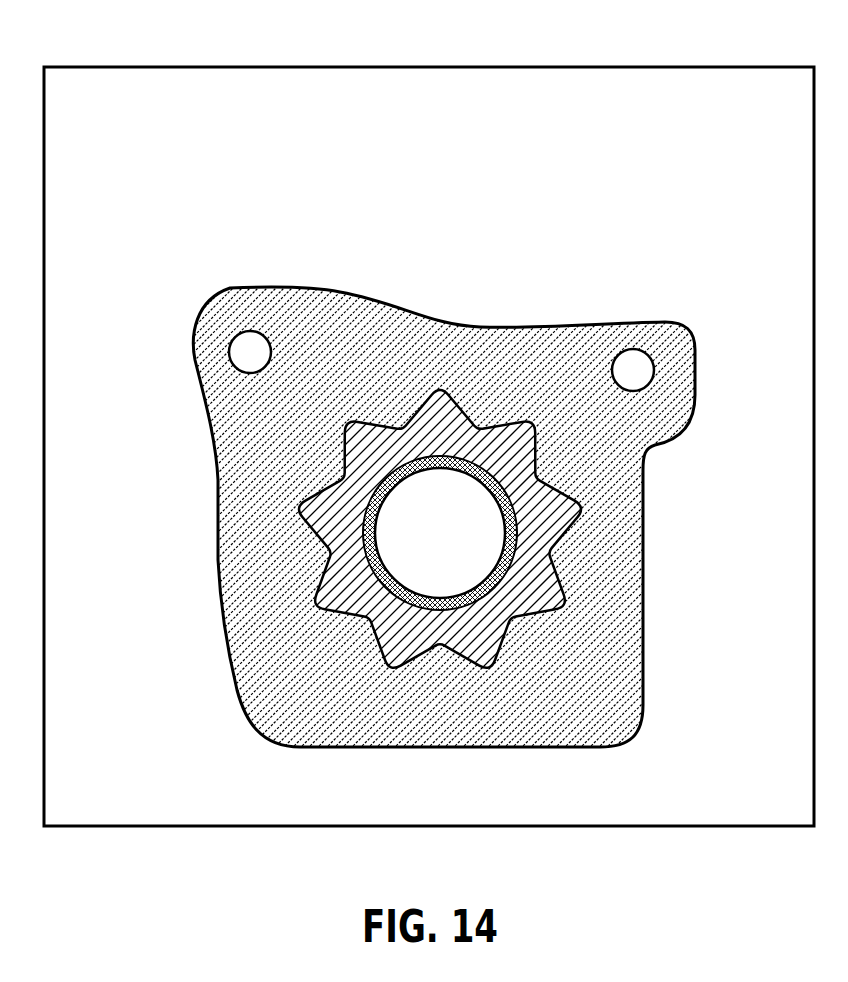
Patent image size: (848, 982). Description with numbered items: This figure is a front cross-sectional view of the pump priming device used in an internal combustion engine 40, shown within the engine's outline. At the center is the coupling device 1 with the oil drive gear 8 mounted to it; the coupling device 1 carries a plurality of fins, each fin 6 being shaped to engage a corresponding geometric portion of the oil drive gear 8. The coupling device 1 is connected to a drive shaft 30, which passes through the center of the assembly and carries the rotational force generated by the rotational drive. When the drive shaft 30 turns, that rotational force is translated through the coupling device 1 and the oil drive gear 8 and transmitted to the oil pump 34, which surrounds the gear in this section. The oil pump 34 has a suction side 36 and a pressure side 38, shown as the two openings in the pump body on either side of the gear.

The coupling device 1 is at (424, 463).
The fin 6 is at (424, 530).
The oil drive gear 8 is at (327, 537).
The drive shaft 30 is at (484, 527).
The oil pump 34 is at (632, 645).
The suction side 36 is at (242, 332).
The pressure side 38 is at (650, 366).
The internal combustion engine 40 is at (133, 67).